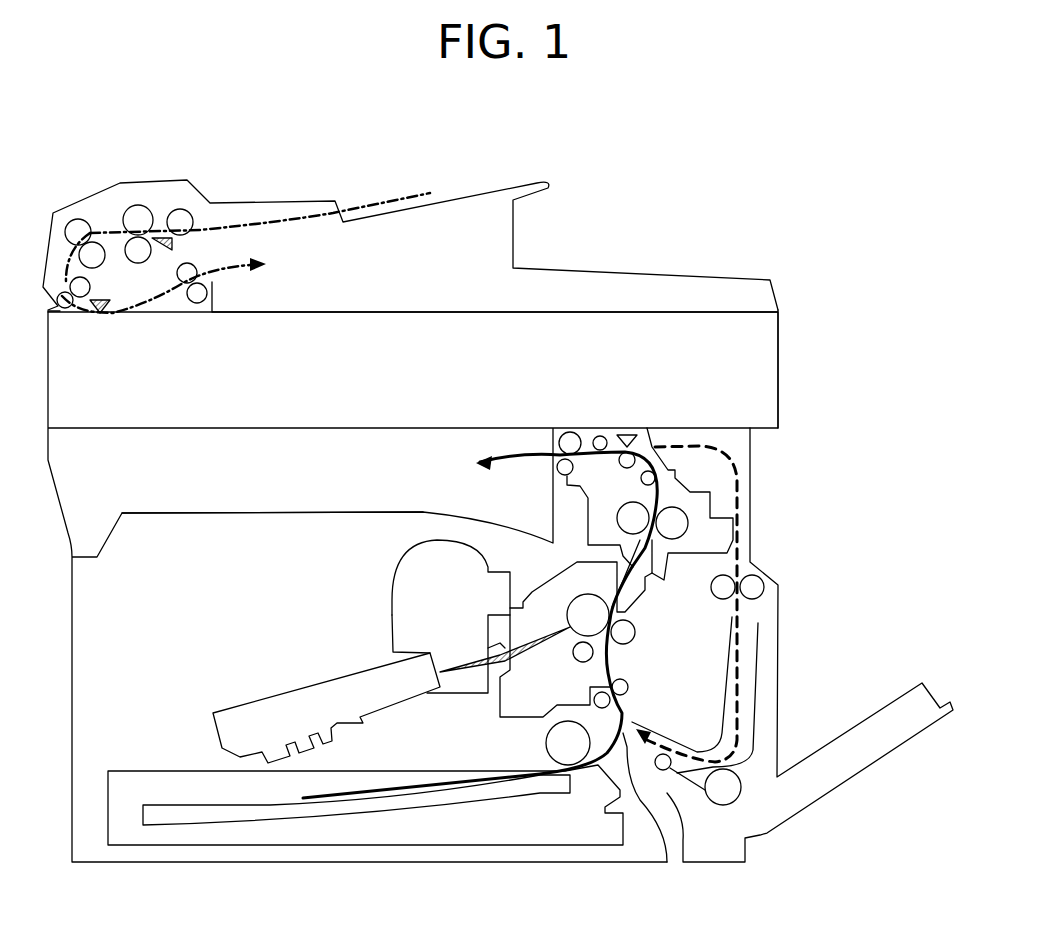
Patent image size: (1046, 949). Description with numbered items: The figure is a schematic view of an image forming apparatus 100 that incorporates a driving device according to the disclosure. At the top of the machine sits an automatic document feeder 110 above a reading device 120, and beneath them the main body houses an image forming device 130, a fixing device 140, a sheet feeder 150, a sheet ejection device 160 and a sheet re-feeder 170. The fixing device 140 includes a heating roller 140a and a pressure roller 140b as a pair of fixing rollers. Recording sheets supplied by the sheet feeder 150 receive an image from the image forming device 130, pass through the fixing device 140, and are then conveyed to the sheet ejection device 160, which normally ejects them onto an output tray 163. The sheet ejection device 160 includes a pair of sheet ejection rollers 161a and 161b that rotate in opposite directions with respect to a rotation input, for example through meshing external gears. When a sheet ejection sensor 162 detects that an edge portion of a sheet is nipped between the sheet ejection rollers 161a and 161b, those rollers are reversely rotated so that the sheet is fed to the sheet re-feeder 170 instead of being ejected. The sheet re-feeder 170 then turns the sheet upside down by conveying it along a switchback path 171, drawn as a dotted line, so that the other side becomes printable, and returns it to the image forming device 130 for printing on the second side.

The image forming apparatus 100 is at (790, 290).
The automatic document feeder 110 is at (475, 190).
The reading device 120 is at (778, 358).
The image forming device 130 is at (362, 588).
The fixing device 140 is at (768, 504).
The heating roller 140a is at (642, 505).
The pressure roller 140b is at (686, 527).
The sheet feeder 150 is at (585, 780).
The sheet ejection device 160 is at (571, 443).
The sheet ejection roller 161a is at (560, 442).
The sheet ejection roller 161b is at (558, 470).
The sheet ejection sensor 162 is at (633, 432).
The output tray 163 is at (318, 510).
The sheet re-feeder 170 is at (772, 608).
The switchback path 171 is at (740, 648).